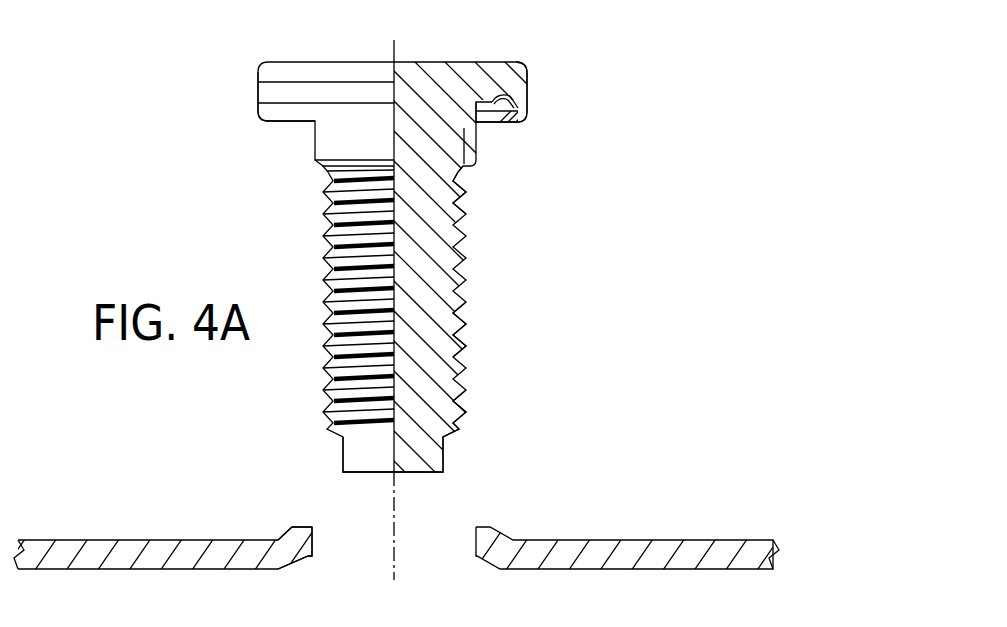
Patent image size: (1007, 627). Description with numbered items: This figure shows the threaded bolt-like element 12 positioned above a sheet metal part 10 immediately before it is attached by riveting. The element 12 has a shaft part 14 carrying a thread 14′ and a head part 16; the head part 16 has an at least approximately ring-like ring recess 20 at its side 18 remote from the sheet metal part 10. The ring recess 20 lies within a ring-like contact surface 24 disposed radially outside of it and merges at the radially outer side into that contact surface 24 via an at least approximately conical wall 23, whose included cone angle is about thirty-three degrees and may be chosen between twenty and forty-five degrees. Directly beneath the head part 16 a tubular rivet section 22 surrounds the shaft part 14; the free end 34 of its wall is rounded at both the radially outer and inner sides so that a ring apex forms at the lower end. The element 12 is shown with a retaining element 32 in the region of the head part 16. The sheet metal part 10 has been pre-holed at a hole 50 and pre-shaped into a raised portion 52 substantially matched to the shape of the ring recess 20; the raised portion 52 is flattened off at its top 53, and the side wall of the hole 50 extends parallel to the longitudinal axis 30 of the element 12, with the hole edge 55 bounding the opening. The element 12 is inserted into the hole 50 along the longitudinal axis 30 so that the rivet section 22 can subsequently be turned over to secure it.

The sheet metal part 10 is at (662, 540).
The element 12 is at (468, 277).
The shaft part 14 is at (447, 451).
The thread 14′ is at (465, 330).
The head part 16 is at (463, 72).
The side remote from the sheet metal part 18 is at (488, 125).
The ring recess 20 is at (498, 120).
The tubular rivet section 22 is at (477, 145).
The conical wall 23 is at (527, 105).
The contact surface 24 is at (270, 124).
The longitudinal axis 30 is at (396, 517).
The retaining element 32 is at (492, 102).
The free end of the wall of the tubular rivet section 34 is at (328, 182).
The hole 50 is at (325, 545).
The raised portion 52 is at (287, 530).
The flattened top 53 is at (308, 527).
The hole edge 55 is at (470, 540).